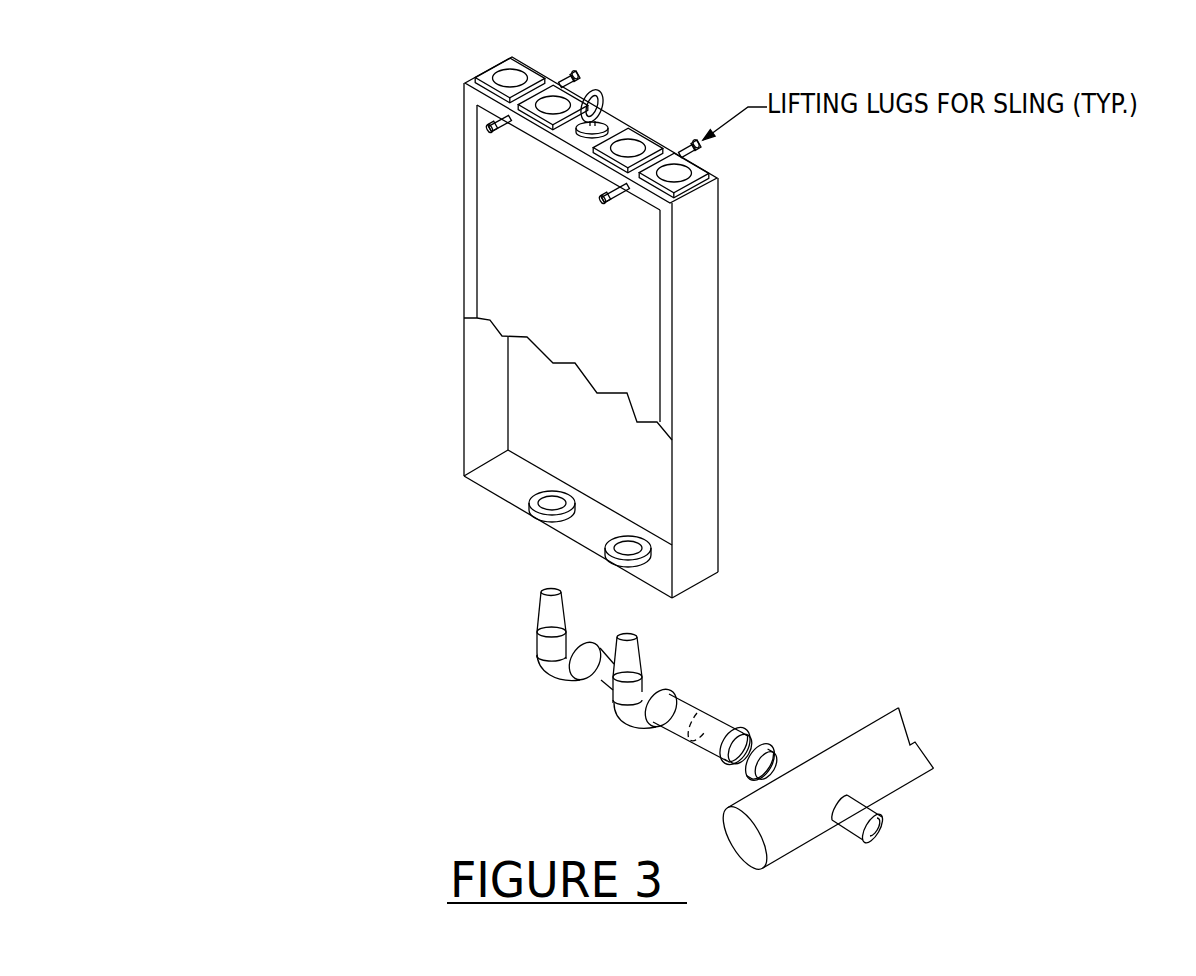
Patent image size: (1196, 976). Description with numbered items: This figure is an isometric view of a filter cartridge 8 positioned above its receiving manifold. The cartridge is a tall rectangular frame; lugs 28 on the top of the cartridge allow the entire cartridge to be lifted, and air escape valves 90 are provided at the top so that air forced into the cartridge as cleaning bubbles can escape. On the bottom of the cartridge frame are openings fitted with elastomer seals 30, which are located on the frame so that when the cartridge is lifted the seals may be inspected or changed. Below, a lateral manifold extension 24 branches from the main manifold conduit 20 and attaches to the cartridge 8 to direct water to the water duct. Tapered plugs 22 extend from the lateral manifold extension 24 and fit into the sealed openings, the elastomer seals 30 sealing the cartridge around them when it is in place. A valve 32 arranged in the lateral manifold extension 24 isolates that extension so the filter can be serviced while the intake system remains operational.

The filter cartridge 8 is at (814, 327).
The air escape valve 90 is at (825, 128).
The lugs 28 is at (613, 97).
The elastomer seal 30 is at (406, 529).
The tapered plugs 22 is at (496, 661).
The lateral manifold extensions 24 is at (444, 740).
The valve 32 is at (653, 790).
The manifold conduit 20 is at (905, 731).